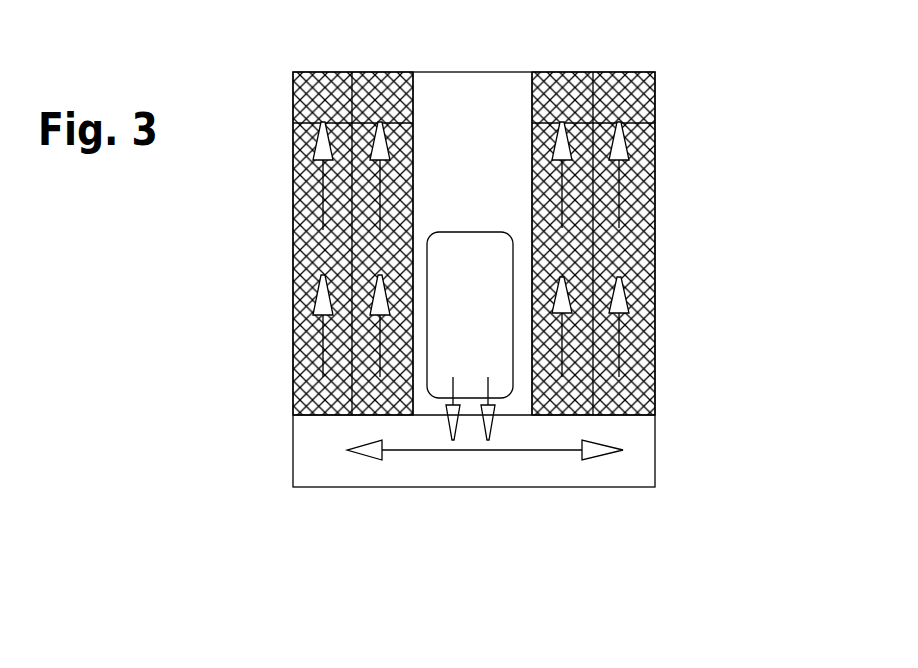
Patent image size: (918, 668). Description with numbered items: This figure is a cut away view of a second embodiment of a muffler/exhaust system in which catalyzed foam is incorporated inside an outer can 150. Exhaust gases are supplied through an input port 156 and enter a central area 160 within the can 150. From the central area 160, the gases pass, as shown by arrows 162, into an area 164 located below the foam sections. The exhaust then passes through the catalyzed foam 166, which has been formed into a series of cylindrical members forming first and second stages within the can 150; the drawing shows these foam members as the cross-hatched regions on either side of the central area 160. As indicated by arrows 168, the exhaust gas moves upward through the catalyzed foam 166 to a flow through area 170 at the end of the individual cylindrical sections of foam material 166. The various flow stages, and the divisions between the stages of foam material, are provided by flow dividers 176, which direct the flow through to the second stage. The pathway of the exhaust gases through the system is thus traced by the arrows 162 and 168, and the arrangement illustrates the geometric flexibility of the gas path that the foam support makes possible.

The outer can 150 is at (313, 376).
The input port 156 is at (484, 265).
The central area 160 is at (498, 38).
The arrows 162 is at (462, 430).
The area 164 is at (337, 461).
The catalyzed foam 166 is at (386, 255).
The arrows 168 is at (313, 207).
The flow through area 170 is at (378, 82).
The flow dividers 176 is at (330, 415).